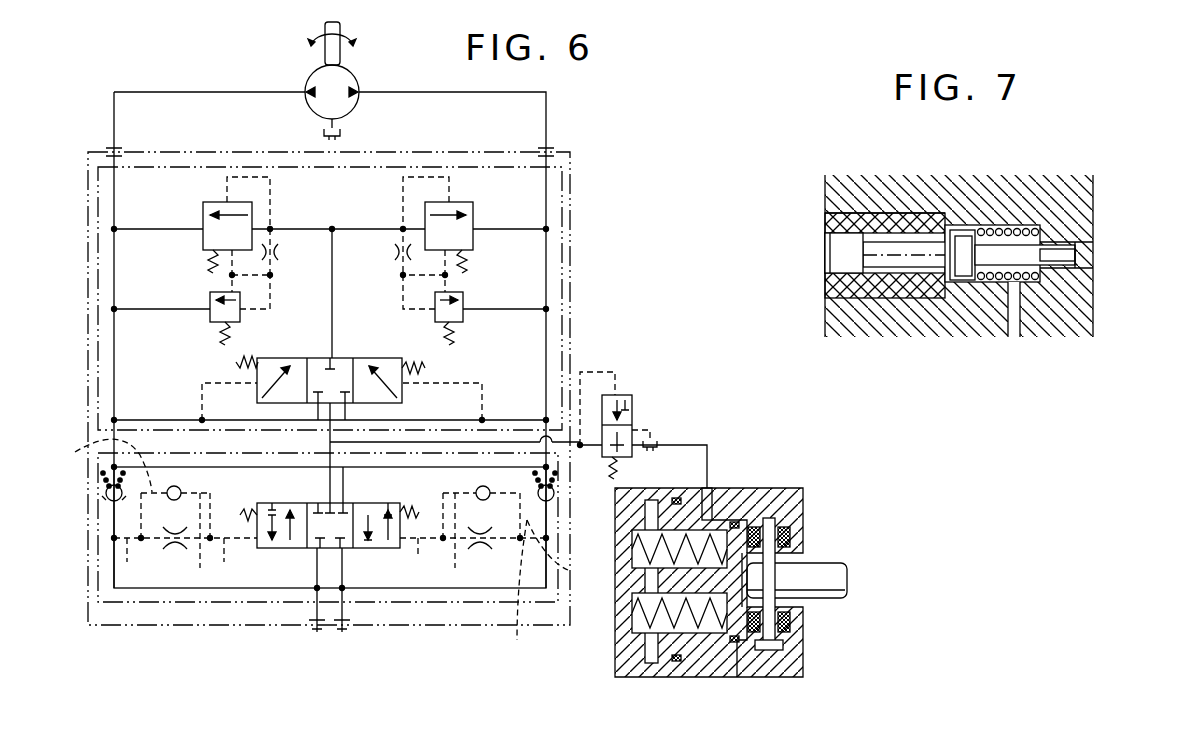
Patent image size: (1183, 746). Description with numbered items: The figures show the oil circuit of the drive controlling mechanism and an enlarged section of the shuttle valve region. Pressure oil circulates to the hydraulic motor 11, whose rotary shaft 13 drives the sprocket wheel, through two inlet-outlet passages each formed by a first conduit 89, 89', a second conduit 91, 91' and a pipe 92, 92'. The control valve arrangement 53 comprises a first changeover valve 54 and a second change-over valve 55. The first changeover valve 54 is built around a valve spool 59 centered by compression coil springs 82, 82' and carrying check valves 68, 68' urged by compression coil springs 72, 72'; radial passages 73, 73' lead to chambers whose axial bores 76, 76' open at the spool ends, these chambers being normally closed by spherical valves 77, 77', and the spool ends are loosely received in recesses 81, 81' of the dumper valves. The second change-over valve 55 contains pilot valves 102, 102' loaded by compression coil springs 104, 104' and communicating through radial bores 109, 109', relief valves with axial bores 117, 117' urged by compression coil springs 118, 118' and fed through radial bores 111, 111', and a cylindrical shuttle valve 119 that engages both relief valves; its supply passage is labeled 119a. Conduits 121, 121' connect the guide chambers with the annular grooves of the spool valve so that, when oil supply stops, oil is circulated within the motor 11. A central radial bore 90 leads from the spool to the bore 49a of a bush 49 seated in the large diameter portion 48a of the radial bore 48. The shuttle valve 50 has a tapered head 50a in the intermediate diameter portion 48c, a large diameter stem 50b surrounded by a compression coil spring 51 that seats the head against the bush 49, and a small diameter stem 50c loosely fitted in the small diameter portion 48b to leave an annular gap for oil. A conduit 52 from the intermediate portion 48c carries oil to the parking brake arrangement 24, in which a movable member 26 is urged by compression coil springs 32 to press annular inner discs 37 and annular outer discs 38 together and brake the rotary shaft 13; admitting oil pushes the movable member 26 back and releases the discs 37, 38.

In FIG. 6, the hydraulic motor 11 is at (357, 76).
In FIG. 6, the rotary shaft 13 is at (341, 27).
In FIG. 6, the first conduit 89 is at (182, 340).
In FIG. 6, the first conduit 89' is at (482, 340).
In FIG. 6, the radial bore 111 is at (206, 226).
In FIG. 6, the radial bore 111' is at (471, 226).
In FIG. 6, the axial bore 117 is at (224, 228).
In FIG. 6, the axial bore 117' is at (439, 228).
In FIG. 6, the compression coil spring 118 is at (218, 310).
In FIG. 6, the compression coil spring 118' is at (466, 316).
In FIG. 6, the radial bore 109 is at (116, 297).
In FIG. 6, the radial bore 109' is at (550, 297).
In FIG. 6, the pilot valve 102 is at (210, 298).
In FIG. 6, the pilot valve 102' is at (465, 298).
In FIG. 6, the compression coil spring 104 is at (193, 334).
In FIG. 6, the compression coil spring 104' is at (482, 334).
In FIG. 6, the cylindrical shuttle valve 119 is at (336, 358).
In FIG. 6, the supply line of valve 119 119a is at (333, 318).
In FIG. 6, the conduit 121 is at (223, 403).
In FIG. 6, the conduit 121' is at (439, 403).
In FIG. 6, the second change-over valve 55 is at (98, 362).
In FIG. 6, the control valve arrangement 53 is at (572, 262).
In FIG. 6, the central radial bore 90 is at (430, 442).
In FIG. 6, the radial passage 73 is at (96, 465).
In FIG. 6, the radial passage 73' is at (566, 552).
In FIG. 6, the compression coil spring 72 is at (82, 482).
In FIG. 6, the compression coil spring 72' is at (569, 482).
In FIG. 6, the check valve 68 is at (83, 505).
In FIG. 6, the check valve 68' is at (572, 505).
In FIG. 6, the second conduit 91 is at (182, 598).
In FIG. 6, the second conduit 91' is at (469, 595).
In FIG. 6, the first changeover valve 54 is at (98, 568).
In FIG. 6, the valve spool 59 is at (262, 552).
In FIG. 6, the spherical valve 77 is at (188, 510).
In FIG. 6, the spherical valve 77' is at (469, 510).
In FIG. 6, the compression coil spring 82 is at (320, 507).
In FIG. 6, the compression coil spring 82' is at (389, 498).
In FIG. 6, the axial bore 76 is at (180, 541).
In FIG. 6, the axial bore 76' is at (483, 558).
In FIG. 6, the recess 81 is at (224, 563).
In FIG. 6, the pilot line 81' is at (430, 541).
In FIG. 6, the pipe 92 is at (296, 652).
In FIG. 6, the pipe 92' is at (360, 609).
In FIG. 6, the shuttle valve 50 is at (622, 395).
In FIG. 7, the shuttle valve 50 is at (960, 282).
In FIG. 6, the radial bore 48 is at (650, 438).
In FIG. 7, the radial bore 48 is at (893, 215).
In FIG. 6, the compression coil spring 51 is at (621, 471).
In FIG. 7, the compression coil spring 51 is at (1010, 228).
In FIG. 6, the conduit 52 is at (690, 445).
In FIG. 7, the conduit 52 is at (1018, 316).
In FIG. 6, the parking brake arrangement 24 is at (707, 579).
In FIG. 6, the compression coil spring 32 is at (620, 622).
In FIG. 6, the annular outer disc 38 is at (790, 620).
In FIG. 6, the annular inner disc 37 is at (785, 640).
In FIG. 6, the movable member 26 is at (675, 660).
In FIG. 7, the large diameter portion 48a is at (845, 218).
In FIG. 7, the small diameter portion 48b is at (1082, 255).
In FIG. 7, the intermediate diameter portion 48c is at (1020, 228).
In FIG. 7, the bush 49 is at (900, 300).
In FIG. 7, the bore 49a is at (876, 270).
In FIG. 7, the tapered head 50a is at (950, 240).
In FIG. 7, the large diameter stem 50b is at (1005, 268).
In FIG. 7, the small diameter stem 50c is at (1076, 262).